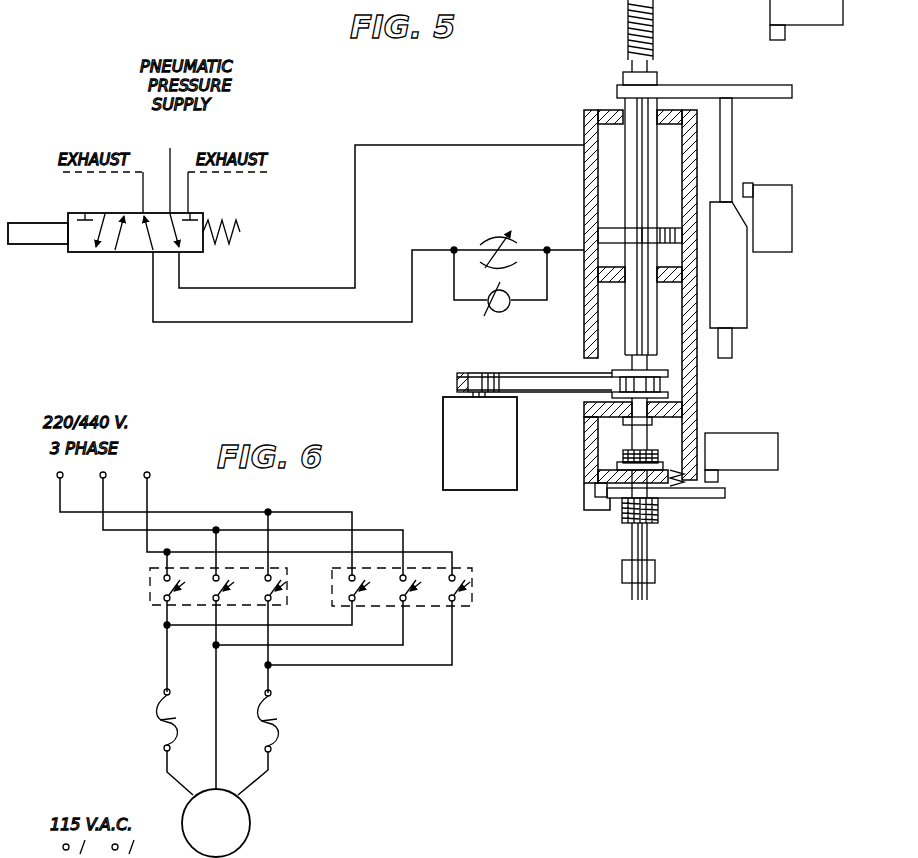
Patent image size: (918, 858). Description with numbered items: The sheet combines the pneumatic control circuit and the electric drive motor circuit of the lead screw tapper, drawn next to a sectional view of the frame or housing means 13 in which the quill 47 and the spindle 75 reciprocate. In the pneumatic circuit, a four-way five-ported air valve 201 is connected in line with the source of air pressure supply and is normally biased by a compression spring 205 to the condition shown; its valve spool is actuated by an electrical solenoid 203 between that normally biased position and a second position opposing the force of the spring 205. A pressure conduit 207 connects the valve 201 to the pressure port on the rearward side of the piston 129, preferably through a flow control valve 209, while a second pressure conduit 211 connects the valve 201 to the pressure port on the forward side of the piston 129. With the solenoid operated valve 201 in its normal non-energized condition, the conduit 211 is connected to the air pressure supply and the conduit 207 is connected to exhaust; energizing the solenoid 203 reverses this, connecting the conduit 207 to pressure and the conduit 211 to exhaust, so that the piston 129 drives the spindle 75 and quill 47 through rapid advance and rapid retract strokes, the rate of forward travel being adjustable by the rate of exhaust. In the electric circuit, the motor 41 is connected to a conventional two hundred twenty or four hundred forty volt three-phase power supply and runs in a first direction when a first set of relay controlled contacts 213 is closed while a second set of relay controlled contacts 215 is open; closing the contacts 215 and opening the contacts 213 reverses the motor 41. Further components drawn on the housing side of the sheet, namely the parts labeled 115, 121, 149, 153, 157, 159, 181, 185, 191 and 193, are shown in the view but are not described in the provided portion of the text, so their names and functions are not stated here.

In FIG. 5, the housing means 13 is at (582, 128).
In FIG. 5, the motor 41 is at (455, 440).
In FIG. 6, the motor 41 is at (238, 823).
In FIG. 5, the quill 47 is at (647, 155).
In FIG. 5, the spindle 75 is at (633, 443).
In FIG. 5, the pulley 115 is at (675, 397).
In FIG. 5, the drive belt 121 is at (543, 382).
In FIG. 5, the piston 129 is at (598, 223).
In FIG. 5, the plate 149 is at (712, 500).
In FIG. 5, the spring 153 is at (683, 486).
In FIG. 5, the limit switch 157 is at (768, 446).
In FIG. 5, the adjusting nut 159 is at (657, 572).
In FIG. 5, the actuator block 181 is at (738, 313).
In FIG. 5, the arm 185 is at (793, 92).
In FIG. 5, the limit switch 191 is at (785, 203).
In FIG. 5, the limit switch 193 is at (818, 15).
In FIG. 5, the four-way five-ported air valve 201 is at (80, 253).
In FIG. 5, the electrical solenoid 203 is at (22, 248).
In FIG. 5, the compression spring 205 is at (240, 237).
In FIG. 5, the pressure conduit 207 is at (277, 325).
In FIG. 5, the flow control valve 209 is at (480, 243).
In FIG. 5, the pressure conduit 211 is at (356, 183).
In FIG. 6, the first set of relay controlled contacts 213 is at (148, 585).
In FIG. 6, the second set of relay controlled contacts 215 is at (475, 585).